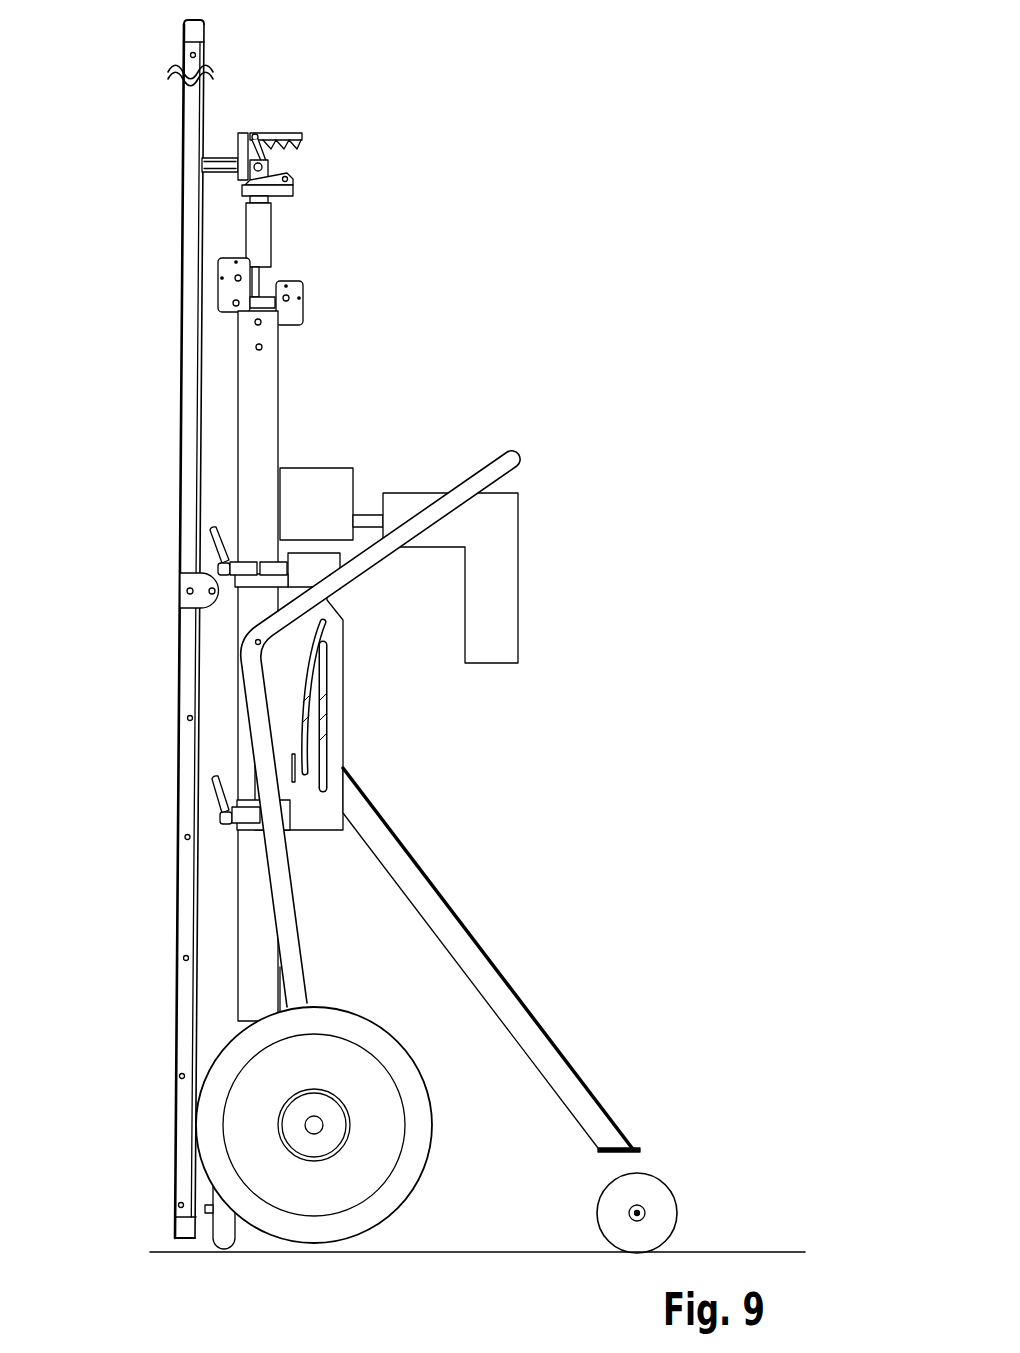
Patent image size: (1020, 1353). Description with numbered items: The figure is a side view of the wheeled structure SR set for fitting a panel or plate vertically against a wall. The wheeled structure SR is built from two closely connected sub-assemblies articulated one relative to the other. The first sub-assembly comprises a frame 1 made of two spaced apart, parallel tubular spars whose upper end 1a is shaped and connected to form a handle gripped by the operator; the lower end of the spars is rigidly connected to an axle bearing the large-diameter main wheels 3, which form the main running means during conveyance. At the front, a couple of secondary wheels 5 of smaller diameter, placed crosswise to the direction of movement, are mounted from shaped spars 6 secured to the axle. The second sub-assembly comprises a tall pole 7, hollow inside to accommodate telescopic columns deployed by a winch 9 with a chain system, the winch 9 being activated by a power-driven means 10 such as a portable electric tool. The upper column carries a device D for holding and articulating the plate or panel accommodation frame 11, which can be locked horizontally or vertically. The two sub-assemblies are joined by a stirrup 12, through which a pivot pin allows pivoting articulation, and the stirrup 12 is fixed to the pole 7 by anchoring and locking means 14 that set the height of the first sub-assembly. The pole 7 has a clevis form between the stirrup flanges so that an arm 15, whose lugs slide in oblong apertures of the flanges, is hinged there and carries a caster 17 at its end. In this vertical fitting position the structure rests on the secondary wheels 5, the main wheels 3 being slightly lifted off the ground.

The frame 1 is at (300, 978).
The upper end 1a is at (513, 461).
The main wheels 3 is at (393, 1127).
The secondary wheels 5 is at (225, 1242).
The shaped spars 6 is at (272, 247).
The pole 7 is at (280, 374).
The winch 9 is at (338, 468).
The power-driven means 10 is at (520, 556).
The accommodation frame 11 is at (183, 893).
The stirrup 12 is at (341, 717).
The anchoring and locking means 14 is at (208, 548).
The arm 15 is at (470, 958).
The caster 17 is at (666, 1213).
The device D is at (263, 133).
The wheeled structure SR is at (482, 224).